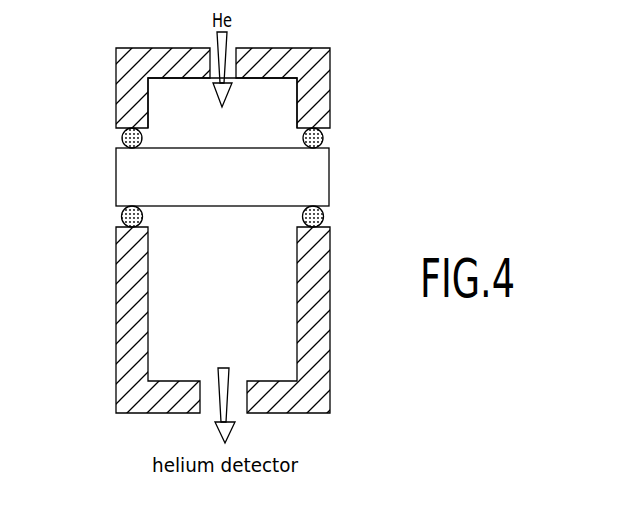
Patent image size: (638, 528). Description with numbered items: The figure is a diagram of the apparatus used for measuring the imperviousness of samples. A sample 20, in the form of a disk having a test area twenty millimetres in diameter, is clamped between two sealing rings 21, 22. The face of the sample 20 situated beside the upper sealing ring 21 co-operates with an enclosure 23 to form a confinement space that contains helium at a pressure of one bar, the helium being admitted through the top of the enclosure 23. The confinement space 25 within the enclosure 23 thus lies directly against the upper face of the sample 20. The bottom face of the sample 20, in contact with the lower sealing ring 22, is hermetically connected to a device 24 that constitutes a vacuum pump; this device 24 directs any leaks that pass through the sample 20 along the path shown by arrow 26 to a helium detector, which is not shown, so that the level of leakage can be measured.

The sample 20 is at (302, 172).
The sealing ring 21 is at (325, 137).
The sealing ring 22 is at (124, 220).
The enclosure 23 is at (314, 95).
The device 24 is at (130, 340).
The upper chamber 25 is at (173, 103).
The arrow 26 is at (232, 369).